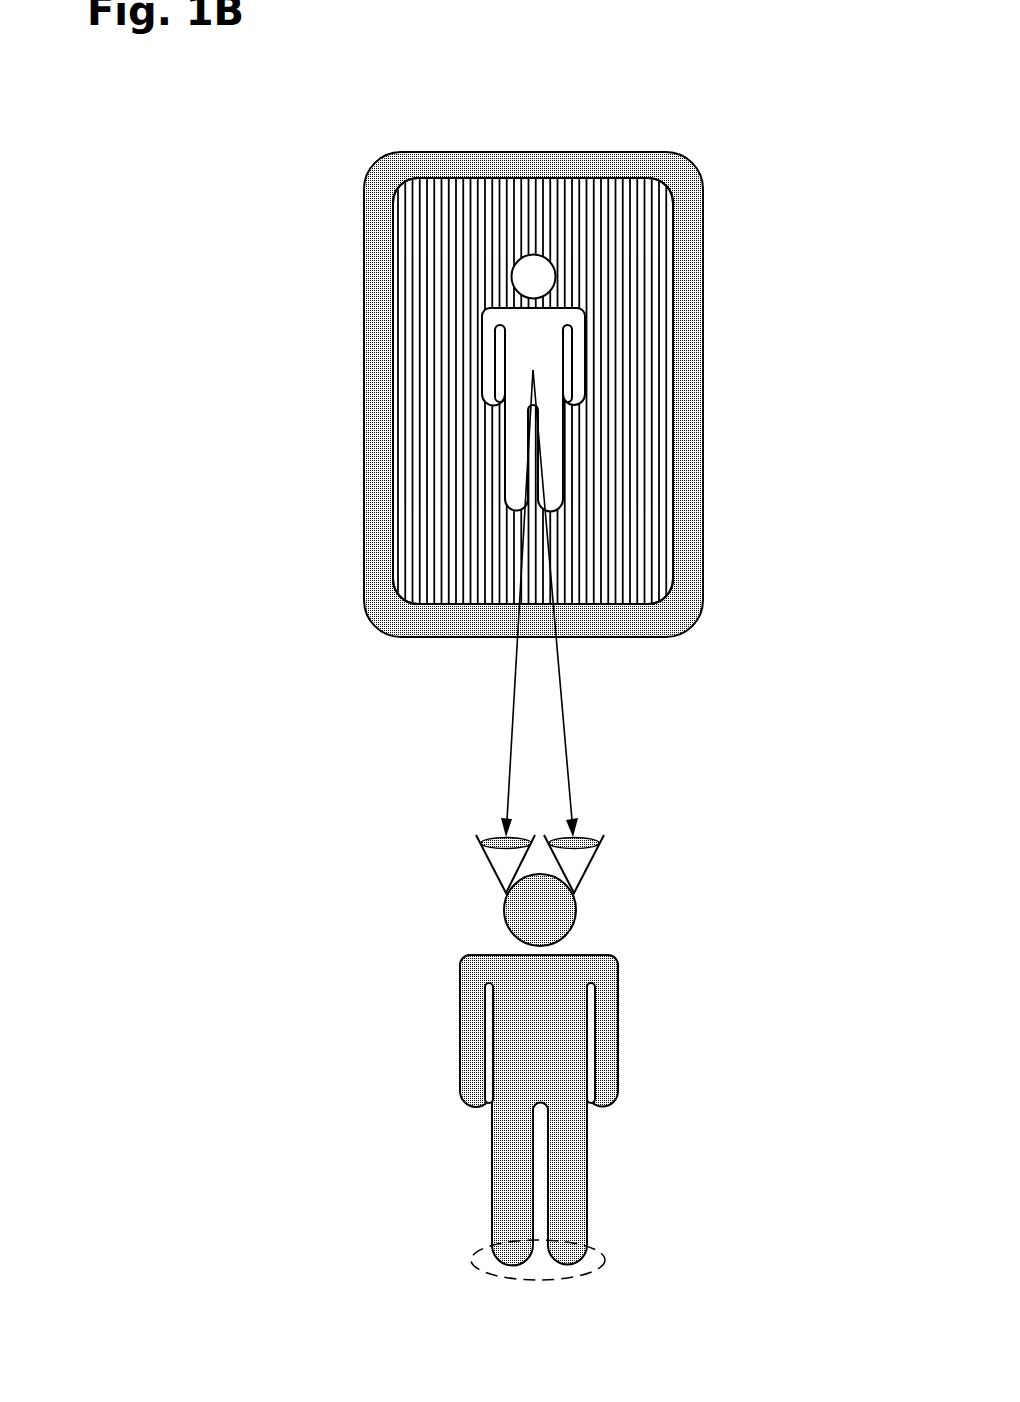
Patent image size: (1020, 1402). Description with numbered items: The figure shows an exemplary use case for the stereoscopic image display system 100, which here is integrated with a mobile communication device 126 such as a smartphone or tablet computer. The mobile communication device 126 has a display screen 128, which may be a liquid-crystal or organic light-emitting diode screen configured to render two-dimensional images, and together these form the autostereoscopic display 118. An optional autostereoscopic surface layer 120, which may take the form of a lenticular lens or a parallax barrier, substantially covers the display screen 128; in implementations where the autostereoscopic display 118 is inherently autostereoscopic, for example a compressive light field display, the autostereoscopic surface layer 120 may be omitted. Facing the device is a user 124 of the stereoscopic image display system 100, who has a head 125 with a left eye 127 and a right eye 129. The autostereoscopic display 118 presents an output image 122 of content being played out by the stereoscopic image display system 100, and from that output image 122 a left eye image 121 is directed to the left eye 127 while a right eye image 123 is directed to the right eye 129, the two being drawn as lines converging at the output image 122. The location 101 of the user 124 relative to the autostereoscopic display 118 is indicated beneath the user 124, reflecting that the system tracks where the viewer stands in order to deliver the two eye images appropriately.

The stereoscopic image display system 100 is at (700, 115).
The location of user 101 is at (468, 1235).
The autostereoscopic display 118 is at (477, 236).
The autostereoscopic surface layer 120 is at (433, 362).
The left eye image 121 is at (510, 743).
The output image 122 is at (553, 368).
The right eye image 123 is at (568, 742).
The user 124 is at (492, 1170).
The head 125 is at (503, 927).
The mobile communication device 126 is at (412, 168).
The left eye 127 is at (489, 863).
The display screen 128 is at (656, 410).
The right eye 129 is at (588, 872).